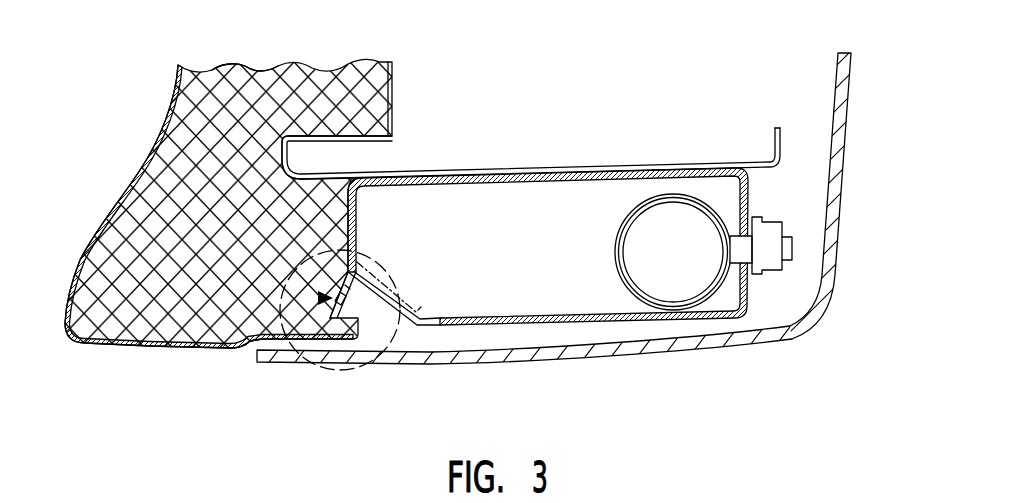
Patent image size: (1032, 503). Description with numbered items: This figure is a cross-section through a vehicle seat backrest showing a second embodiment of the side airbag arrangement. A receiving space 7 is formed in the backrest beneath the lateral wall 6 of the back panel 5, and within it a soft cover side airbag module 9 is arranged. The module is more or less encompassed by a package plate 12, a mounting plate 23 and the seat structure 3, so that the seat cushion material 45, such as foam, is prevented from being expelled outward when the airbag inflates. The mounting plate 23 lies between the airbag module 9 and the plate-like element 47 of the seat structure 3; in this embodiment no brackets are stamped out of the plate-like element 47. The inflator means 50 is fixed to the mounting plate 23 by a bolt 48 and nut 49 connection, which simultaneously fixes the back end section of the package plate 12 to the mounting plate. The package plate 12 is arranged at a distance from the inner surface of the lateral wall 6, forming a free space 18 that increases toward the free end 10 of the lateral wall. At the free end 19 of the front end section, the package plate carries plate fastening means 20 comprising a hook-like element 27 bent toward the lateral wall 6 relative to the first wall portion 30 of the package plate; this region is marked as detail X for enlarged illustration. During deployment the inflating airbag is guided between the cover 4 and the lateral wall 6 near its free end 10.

The seat structure 3 is at (548, 249).
The cover 4 is at (148, 346).
The back panel 5 is at (583, 234).
The lateral wall 6 is at (541, 355).
The receiving space 7 is at (569, 360).
The soft cover side airbag module 9 is at (563, 282).
The free end of lateral wall 10 is at (250, 352).
The package plate 12 is at (697, 321).
The free space 18 is at (433, 346).
The free end of front end section 19 is at (351, 357).
The plate fastening means 20 is at (351, 357).
The hook-like element 27 is at (302, 416).
The mounting plate 23 is at (545, 168).
The first wall portion 30 is at (398, 282).
The seat cushion material 45 is at (246, 90).
The plate-like element 47 is at (548, 265).
The bolt 48 is at (789, 240).
The nut 49 is at (771, 270).
The inflator means 50 is at (660, 194).
The detail X is at (363, 372).